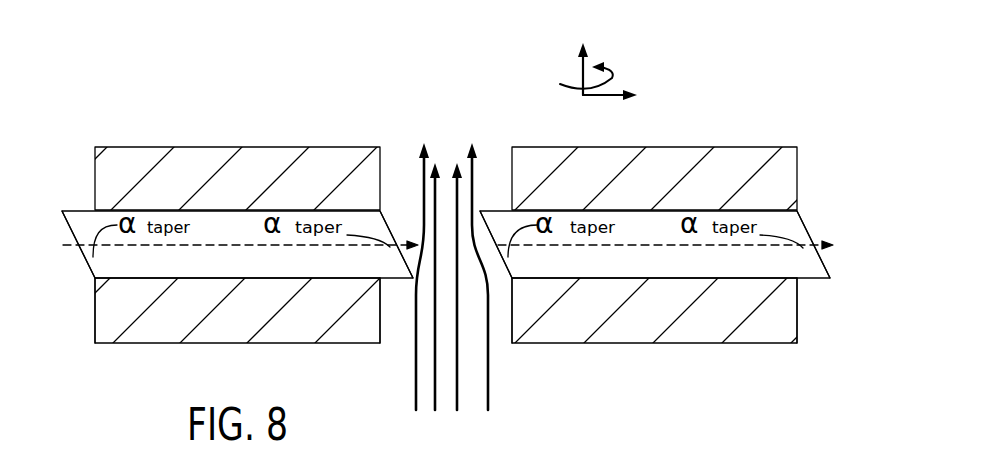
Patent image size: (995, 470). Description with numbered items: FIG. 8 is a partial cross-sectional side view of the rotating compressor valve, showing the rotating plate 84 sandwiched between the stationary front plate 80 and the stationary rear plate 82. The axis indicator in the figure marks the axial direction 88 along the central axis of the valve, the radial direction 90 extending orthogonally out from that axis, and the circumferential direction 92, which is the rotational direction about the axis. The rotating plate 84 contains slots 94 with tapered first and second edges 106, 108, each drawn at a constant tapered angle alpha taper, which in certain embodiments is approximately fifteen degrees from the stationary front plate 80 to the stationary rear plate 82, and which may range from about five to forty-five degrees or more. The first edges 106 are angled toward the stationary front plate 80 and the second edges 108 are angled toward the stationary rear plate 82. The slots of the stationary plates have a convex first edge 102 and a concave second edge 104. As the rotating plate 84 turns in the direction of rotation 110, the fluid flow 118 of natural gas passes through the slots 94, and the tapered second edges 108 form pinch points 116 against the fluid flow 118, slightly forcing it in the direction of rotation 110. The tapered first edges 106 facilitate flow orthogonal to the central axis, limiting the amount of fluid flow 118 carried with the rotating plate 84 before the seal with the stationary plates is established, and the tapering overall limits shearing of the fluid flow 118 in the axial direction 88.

The stationary front plate 80 is at (153, 330).
The stationary rear plate 82 is at (127, 156).
The rotating plate 84 is at (82, 215).
The axial direction 88 is at (580, 68).
The radial direction 90 is at (603, 98).
The circumferential direction 92 is at (572, 83).
The slots 94 is at (467, 269).
The first edge 102 is at (95, 325).
The second edge 104 is at (382, 344).
The first edge 106 is at (85, 251).
The second edge 108 is at (395, 243).
The direction of rotation 110 is at (150, 249).
The pinch points 116 is at (411, 288).
The fluid flow 118 is at (466, 382).